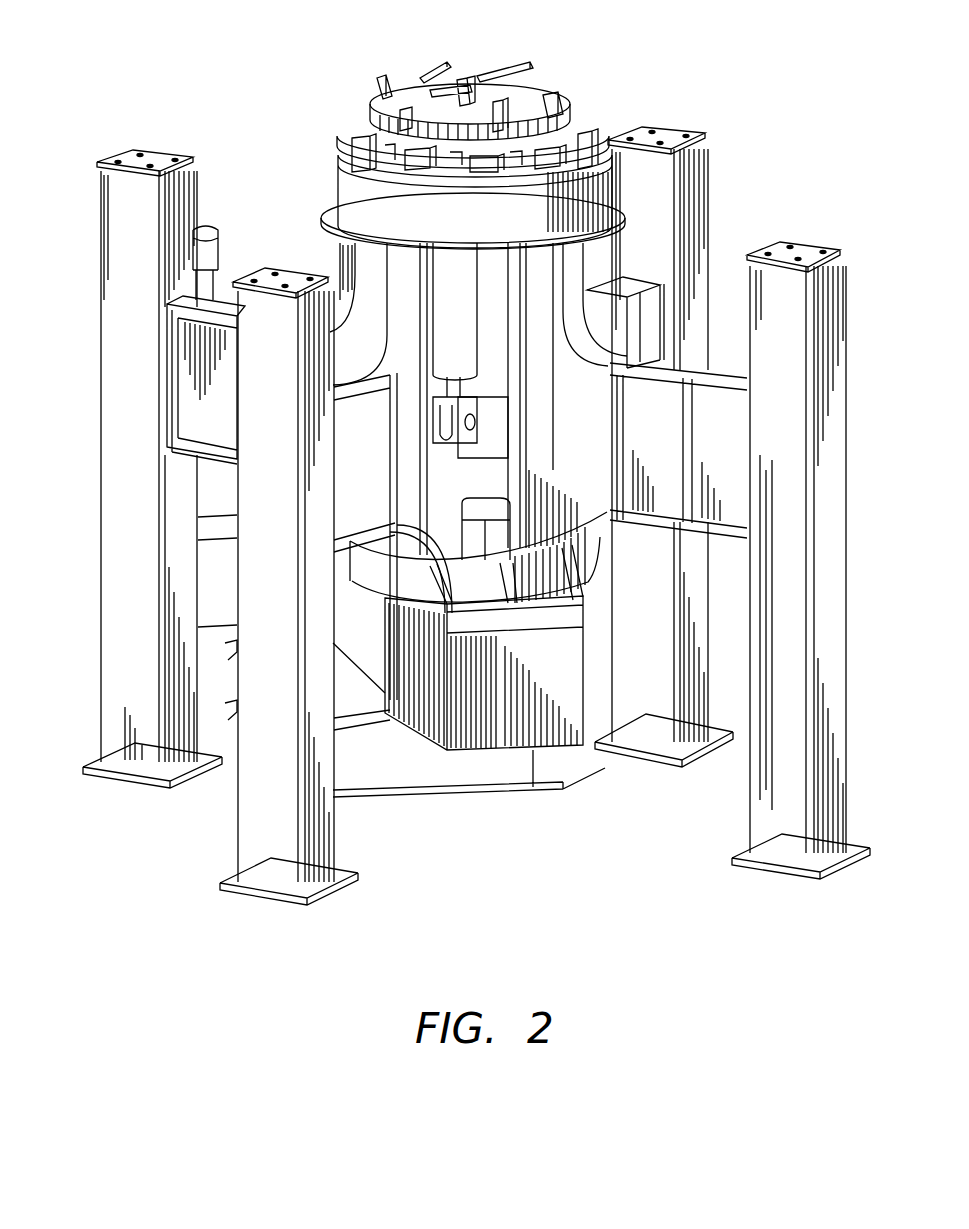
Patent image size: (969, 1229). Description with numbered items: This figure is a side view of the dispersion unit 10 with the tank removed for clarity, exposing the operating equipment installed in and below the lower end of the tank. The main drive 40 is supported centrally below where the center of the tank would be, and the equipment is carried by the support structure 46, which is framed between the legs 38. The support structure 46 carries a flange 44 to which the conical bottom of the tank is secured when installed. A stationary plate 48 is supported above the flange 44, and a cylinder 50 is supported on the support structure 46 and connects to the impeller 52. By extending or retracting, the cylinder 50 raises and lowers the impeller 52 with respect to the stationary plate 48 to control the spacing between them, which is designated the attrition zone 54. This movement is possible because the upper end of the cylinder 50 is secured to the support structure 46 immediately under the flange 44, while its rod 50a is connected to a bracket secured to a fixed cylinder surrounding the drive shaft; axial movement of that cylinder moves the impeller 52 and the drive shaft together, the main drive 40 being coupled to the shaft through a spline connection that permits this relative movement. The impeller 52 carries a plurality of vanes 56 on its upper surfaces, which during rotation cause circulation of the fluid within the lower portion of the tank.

The dispersion unit 10 is at (758, 136).
The legs 38 is at (101, 710).
The main drive 40 is at (565, 725).
The flange 44 is at (323, 212).
The support structure 46 is at (356, 248).
The stationary plate 48 is at (338, 163).
The cylinder 50 is at (478, 361).
The rod 50a is at (461, 388).
The impeller 52 is at (403, 80).
The attrition zone 54 is at (338, 140).
The vanes 56 is at (505, 70).